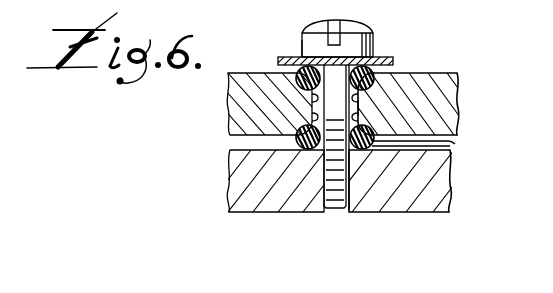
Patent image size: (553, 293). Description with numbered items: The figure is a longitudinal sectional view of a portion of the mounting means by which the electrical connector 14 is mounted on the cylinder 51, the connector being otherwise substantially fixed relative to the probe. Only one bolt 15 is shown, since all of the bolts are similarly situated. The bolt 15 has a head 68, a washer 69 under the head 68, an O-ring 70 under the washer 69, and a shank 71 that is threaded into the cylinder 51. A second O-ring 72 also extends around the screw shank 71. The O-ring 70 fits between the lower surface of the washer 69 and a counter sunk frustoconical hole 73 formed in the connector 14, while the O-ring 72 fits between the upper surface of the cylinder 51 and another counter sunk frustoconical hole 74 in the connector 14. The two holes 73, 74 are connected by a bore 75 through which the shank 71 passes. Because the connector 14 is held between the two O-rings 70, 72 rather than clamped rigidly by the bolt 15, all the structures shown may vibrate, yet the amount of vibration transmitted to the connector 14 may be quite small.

The connector 14 is at (452, 74).
The bolt 15 is at (377, 33).
The cylinder 51 is at (426, 201).
The head 68 is at (302, 47).
The washer 69 is at (383, 61).
The O-ring 70 is at (297, 76).
The shank 71 is at (340, 212).
The second O-ring 72 is at (453, 144).
The counter sunk frustoconical hole 73 is at (308, 95).
The counter sunk frustoconical hole 74 is at (297, 141).
The bore 75 is at (372, 110).